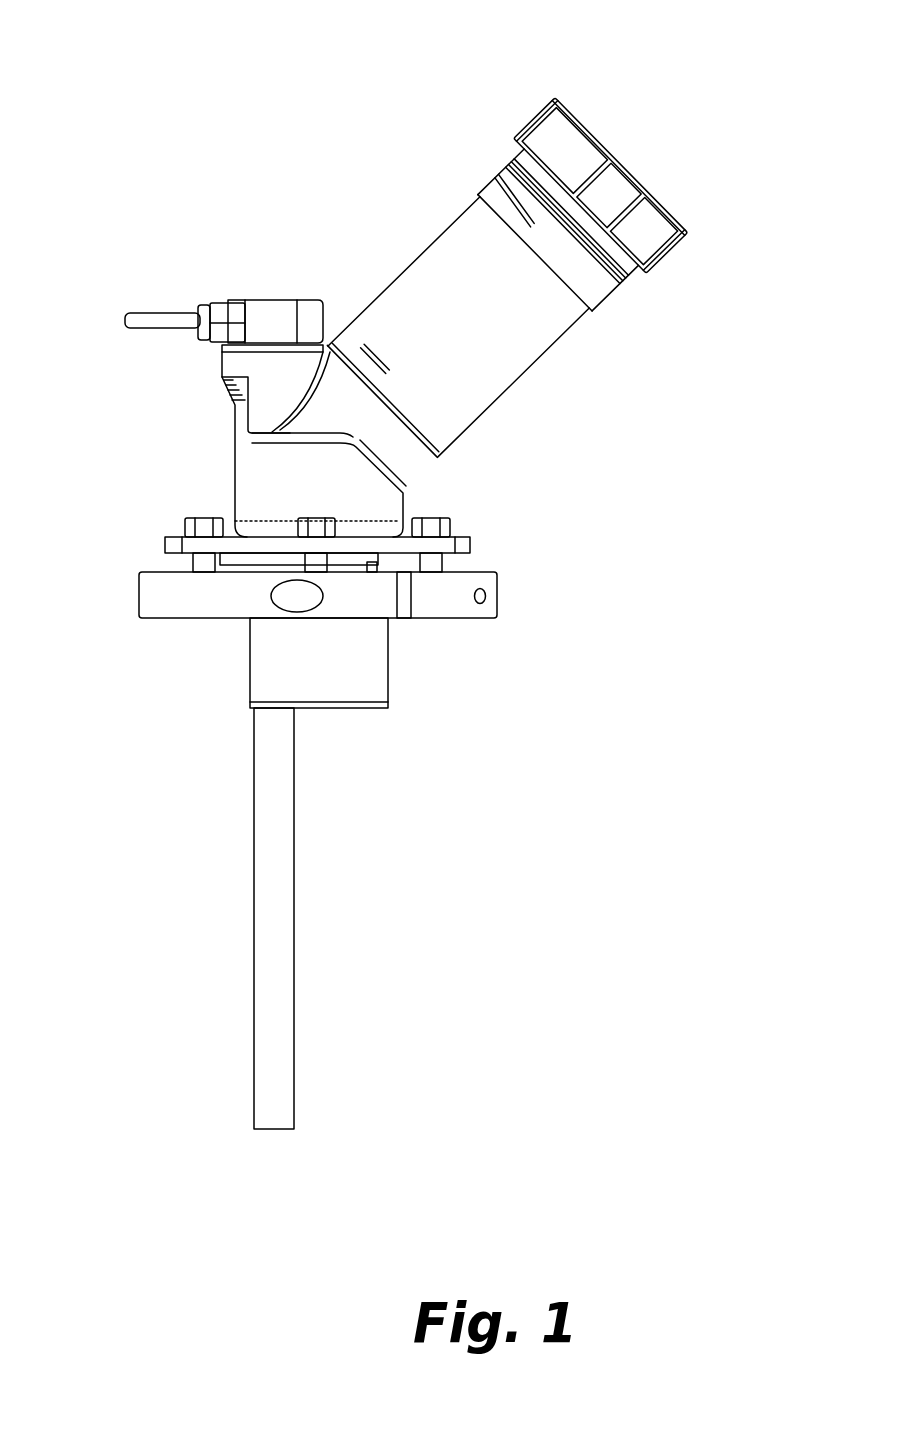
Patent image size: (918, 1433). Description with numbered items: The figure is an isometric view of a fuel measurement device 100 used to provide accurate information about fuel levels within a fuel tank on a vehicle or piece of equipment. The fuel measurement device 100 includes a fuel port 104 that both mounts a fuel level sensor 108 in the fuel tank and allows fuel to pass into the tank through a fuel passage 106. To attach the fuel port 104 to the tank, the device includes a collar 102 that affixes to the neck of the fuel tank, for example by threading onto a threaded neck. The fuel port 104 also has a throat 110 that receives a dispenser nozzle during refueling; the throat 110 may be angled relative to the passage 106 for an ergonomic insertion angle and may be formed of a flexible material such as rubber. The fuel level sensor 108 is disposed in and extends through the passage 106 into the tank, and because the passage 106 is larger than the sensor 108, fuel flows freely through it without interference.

The fuel measurement device 100 is at (226, 84).
The collar 102 is at (170, 600).
The fuel port 104 is at (385, 450).
The fuel passage 106 is at (371, 672).
The fuel level sensor 108 is at (278, 880).
The throat 110 is at (550, 308).